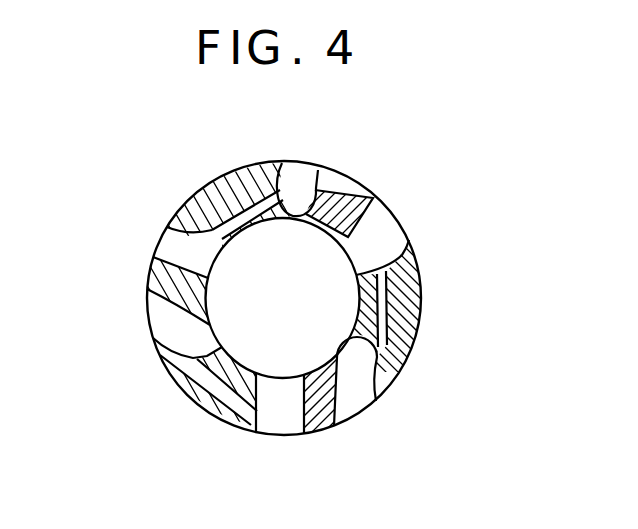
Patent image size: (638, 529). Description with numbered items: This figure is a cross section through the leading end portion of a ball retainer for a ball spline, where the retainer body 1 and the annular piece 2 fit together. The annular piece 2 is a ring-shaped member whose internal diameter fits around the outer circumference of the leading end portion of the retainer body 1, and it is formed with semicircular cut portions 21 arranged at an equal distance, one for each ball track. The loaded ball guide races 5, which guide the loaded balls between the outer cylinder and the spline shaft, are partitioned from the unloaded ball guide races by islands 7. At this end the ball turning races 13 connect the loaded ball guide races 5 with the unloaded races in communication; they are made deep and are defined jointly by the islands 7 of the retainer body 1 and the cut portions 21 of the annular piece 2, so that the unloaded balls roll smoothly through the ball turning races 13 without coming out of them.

The retainer body 1 is at (222, 327).
The annular piece 2 is at (424, 265).
The loaded ball guide races 5 is at (368, 268).
The islands 7 is at (373, 198).
The ball turning races 13 is at (318, 187).
The semicircular cut portions 21 is at (376, 401).